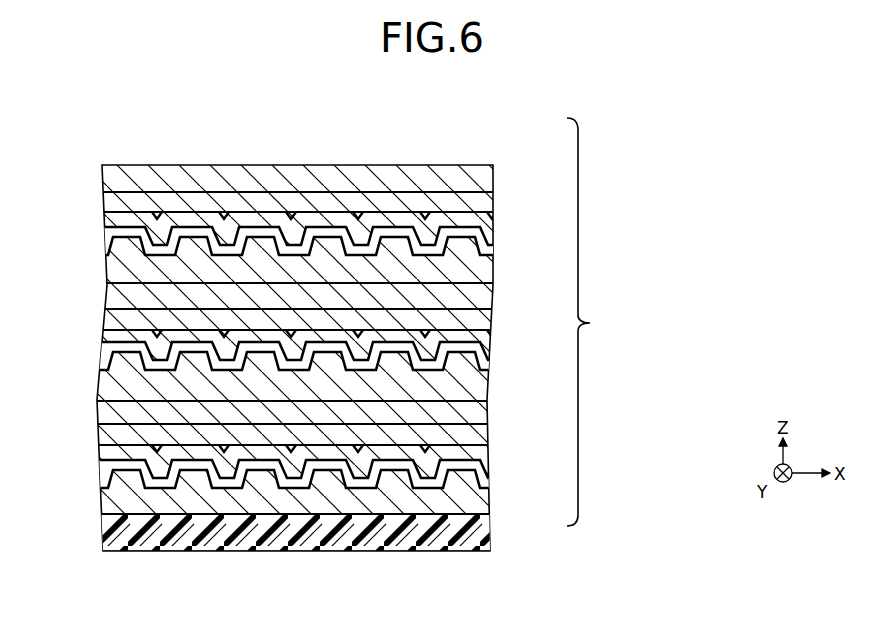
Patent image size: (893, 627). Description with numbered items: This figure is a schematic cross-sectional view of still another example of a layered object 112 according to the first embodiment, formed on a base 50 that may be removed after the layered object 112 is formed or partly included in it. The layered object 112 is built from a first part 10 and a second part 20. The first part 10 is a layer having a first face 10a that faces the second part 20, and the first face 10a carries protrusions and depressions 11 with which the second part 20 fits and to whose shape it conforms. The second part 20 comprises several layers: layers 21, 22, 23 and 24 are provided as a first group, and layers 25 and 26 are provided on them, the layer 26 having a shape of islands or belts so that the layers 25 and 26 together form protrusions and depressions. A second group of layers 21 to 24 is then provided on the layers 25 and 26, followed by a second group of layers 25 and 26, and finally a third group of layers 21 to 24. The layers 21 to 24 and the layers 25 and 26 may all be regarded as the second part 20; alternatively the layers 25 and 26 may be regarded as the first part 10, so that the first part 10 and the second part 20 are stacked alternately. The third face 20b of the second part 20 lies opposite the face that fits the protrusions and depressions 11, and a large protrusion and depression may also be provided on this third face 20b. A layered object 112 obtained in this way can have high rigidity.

The second part 20 is at (357, 334).
The third face 20b is at (418, 165).
The layer 24 is at (468, 178).
The layer 23 is at (465, 202).
The layer 22 is at (460, 222).
The layer 21 is at (456, 240).
The layer 26 is at (466, 268).
The layer 25 is at (472, 281).
The first part 10 is at (465, 500).
The first face 10a is at (460, 462).
The protrusions and depressions 11 is at (117, 475).
The base 50 is at (462, 531).
The layered object 112 is at (642, 219).